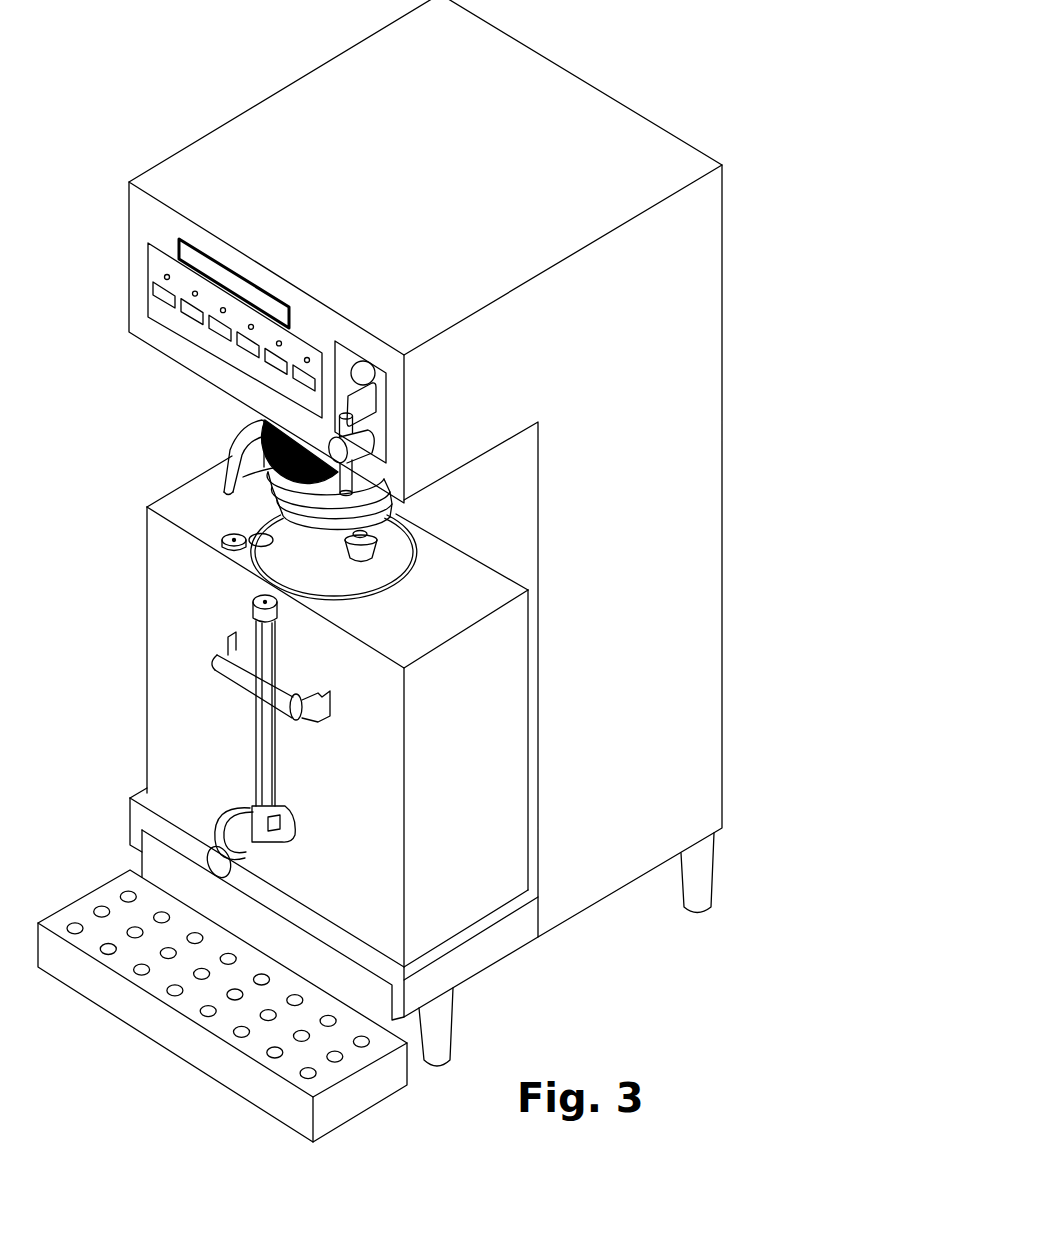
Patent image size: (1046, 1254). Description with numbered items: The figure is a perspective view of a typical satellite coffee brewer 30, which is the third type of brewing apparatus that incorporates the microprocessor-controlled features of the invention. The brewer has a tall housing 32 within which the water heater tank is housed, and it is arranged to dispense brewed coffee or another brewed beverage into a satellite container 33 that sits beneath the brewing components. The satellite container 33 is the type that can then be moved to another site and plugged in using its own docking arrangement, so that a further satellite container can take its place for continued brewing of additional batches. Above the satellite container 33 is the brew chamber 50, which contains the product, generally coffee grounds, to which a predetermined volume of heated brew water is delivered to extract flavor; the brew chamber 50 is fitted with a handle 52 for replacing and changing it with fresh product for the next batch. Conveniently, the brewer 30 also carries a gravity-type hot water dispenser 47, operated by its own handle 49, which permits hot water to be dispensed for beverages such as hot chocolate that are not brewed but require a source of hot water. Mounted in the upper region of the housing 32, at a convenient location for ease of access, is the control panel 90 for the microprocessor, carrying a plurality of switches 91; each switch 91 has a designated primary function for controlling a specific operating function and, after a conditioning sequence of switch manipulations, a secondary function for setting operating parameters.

The satellite coffee brewer 30 is at (835, 187).
The housing 32 is at (670, 378).
The satellite container 33 is at (483, 758).
The gravity-type hot water dispenser 47 is at (403, 498).
The handle 49 is at (356, 421).
The brew chamber 50 is at (240, 523).
The handle 52 is at (197, 477).
The control panel 90 is at (293, 347).
The switches 91 is at (243, 353).